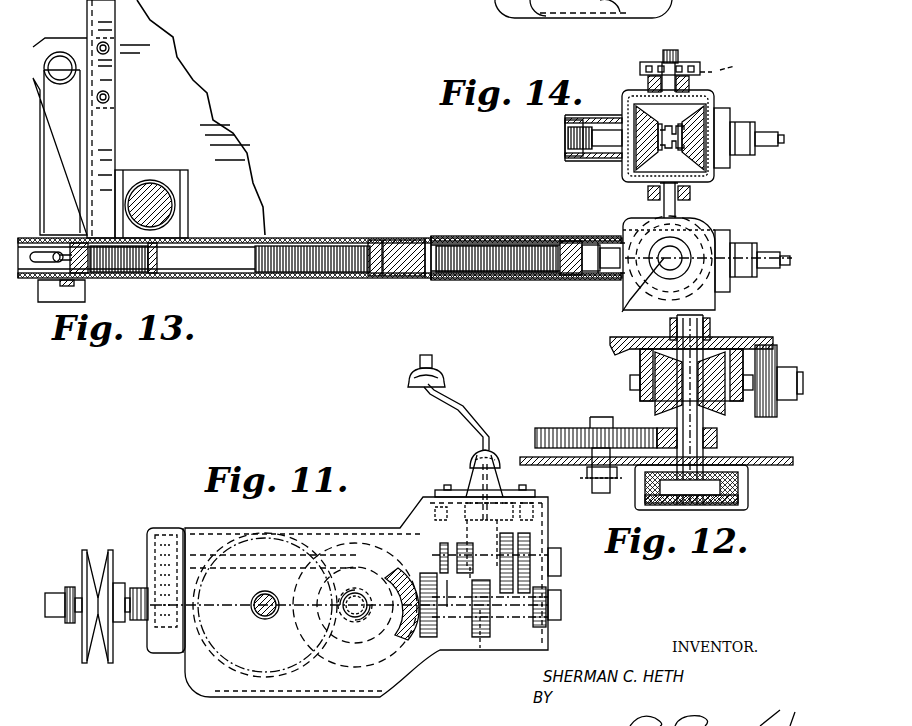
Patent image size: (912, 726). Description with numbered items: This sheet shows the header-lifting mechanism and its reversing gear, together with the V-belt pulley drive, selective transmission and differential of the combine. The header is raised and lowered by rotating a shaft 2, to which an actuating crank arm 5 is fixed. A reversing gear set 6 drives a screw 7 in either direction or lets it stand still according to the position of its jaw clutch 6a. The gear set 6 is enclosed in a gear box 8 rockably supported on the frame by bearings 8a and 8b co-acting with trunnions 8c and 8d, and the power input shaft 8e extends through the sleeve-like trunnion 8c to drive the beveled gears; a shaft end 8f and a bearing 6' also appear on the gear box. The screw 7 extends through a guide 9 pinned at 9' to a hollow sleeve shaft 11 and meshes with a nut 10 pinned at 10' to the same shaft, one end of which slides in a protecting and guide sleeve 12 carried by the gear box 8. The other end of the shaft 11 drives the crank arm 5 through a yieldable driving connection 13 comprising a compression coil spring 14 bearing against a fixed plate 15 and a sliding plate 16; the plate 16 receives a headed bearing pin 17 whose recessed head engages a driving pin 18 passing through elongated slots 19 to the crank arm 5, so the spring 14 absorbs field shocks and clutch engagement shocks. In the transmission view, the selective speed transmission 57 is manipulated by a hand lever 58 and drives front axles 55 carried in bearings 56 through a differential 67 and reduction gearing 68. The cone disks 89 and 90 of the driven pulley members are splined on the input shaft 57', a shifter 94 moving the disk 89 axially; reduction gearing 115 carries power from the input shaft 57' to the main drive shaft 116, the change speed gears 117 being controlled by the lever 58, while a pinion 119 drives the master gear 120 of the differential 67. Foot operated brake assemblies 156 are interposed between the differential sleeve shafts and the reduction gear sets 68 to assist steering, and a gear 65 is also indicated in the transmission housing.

In FIG. 13, the shaft 2 is at (60, 62).
In FIG. 13, the actuating crank arm 5 is at (42, 137).
In FIG. 13, the front axle 55 is at (155, 190).
In FIG. 12, the front axle 55 is at (592, 482).
In FIG. 11, the front axle 55 is at (262, 617).
In FIG. 13, the headed bearing pin 17 is at (68, 252).
In FIG. 13, the sliding plate 16 is at (78, 252).
In FIG. 13, the elongated slots 19 is at (42, 255).
In FIG. 13, the plate 15 is at (160, 262).
In FIG. 13, the driving pin 18 is at (58, 268).
In FIG. 13, the compression coil spring 14 is at (118, 278).
In FIG. 13, the yieldable driving connection 13 is at (68, 284).
In FIG. 13, the sleeve shaft 11 is at (280, 240).
In FIG. 13, the screw 7 is at (310, 252).
In FIG. 14, the screw 7 is at (568, 136).
In FIG. 13, the pin 10' is at (389, 234).
In FIG. 13, the nut 10 is at (411, 242).
In FIG. 13, the protecting and guide sleeve 12 is at (512, 238).
In FIG. 14, the protecting and guide sleeve 12 is at (575, 160).
In FIG. 13, the guide 9 is at (582, 241).
In FIG. 13, the pin 9' is at (569, 286).
In FIG. 13, the reversing gear set 6 is at (605, 212).
In FIG. 14, the reversing gear set 6 is at (682, 125).
In FIG. 13, the gear box 8 is at (630, 288).
In FIG. 13, the bearing 8a is at (656, 193).
In FIG. 14, the bearing 8a is at (648, 82).
In FIG. 13, the bearing 8b is at (622, 312).
In FIG. 14, the bearing 8b is at (692, 193).
In FIG. 14, the trunnion 8c is at (698, 70).
In FIG. 13, the trunnion 8d is at (672, 258).
In FIG. 14, the power input shaft 8e is at (728, 73).
In FIG. 14, the shaft end 8f is at (670, 52).
In FIG. 14, the jaw clutch 6a is at (672, 148).
In FIG. 14, the bearing 6' is at (748, 150).
In FIG. 12, the master gear 120 is at (723, 350).
In FIG. 11, the master gear 120 is at (356, 668).
In FIG. 12, the differential 67 is at (632, 371).
In FIG. 11, the differential 67 is at (369, 538).
In FIG. 12, the reduction gearing 68 is at (572, 420).
In FIG. 12, the pinion 119 is at (756, 417).
In FIG. 11, the pinion 119 is at (410, 665).
In FIG. 12, the brake assembly 156 is at (748, 495).
In FIG. 12, the bearing 56 is at (588, 470).
In FIG. 11, the shifter 94 is at (55, 592).
In FIG. 11, the cone disk portion 89 is at (85, 549).
In FIG. 11, the cone disk portion 90 is at (113, 550).
In FIG. 11, the reduction gearing 115 is at (163, 535).
In FIG. 11, the selective speed transmission 57 is at (347, 570).
In FIG. 11, the gear 65 is at (303, 548).
In FIG. 11, the main drive shaft 116 is at (440, 510).
In FIG. 11, the input shaft 57' is at (132, 632).
In FIG. 11, the change speed gears 117 is at (496, 648).
In FIG. 11, the hand lever 58 is at (450, 395).